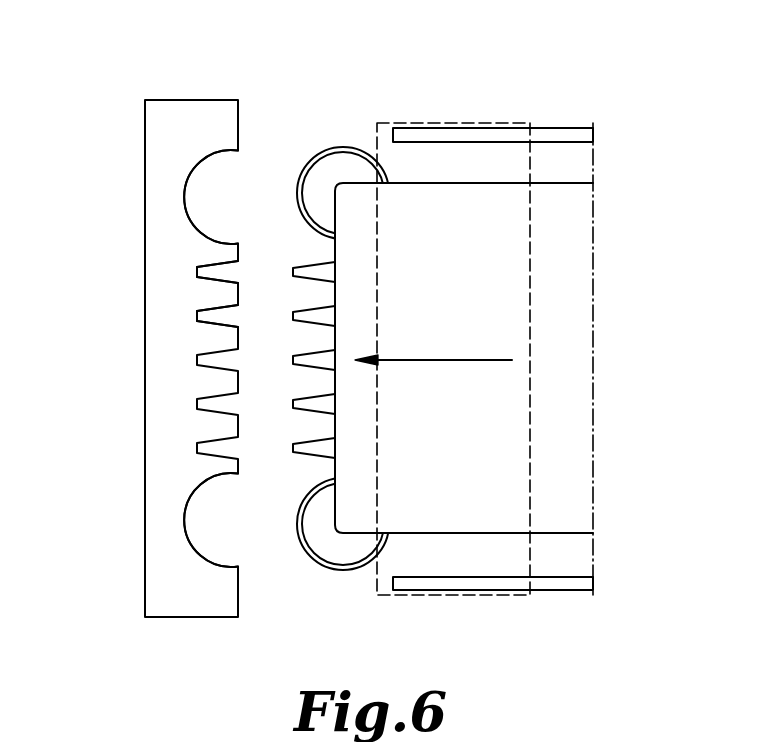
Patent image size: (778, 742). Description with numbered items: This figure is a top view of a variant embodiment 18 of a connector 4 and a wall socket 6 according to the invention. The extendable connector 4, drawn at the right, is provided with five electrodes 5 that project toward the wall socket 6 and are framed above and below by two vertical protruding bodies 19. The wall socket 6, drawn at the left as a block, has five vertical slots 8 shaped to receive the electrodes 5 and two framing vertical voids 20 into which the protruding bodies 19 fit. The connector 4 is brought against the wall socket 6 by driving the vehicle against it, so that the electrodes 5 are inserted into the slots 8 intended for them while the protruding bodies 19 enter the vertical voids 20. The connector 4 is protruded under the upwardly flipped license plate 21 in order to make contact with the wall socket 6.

The connector 4 is at (557, 162).
The electrodes 5 is at (307, 318).
The wall socket 6 is at (192, 130).
The vertical slots 8 is at (197, 270).
The variant embodiment 18 is at (694, 117).
The vertical protruding bodies 19 is at (327, 178).
The framing vertical voids 20 is at (225, 198).
The license plate 21 is at (492, 566).